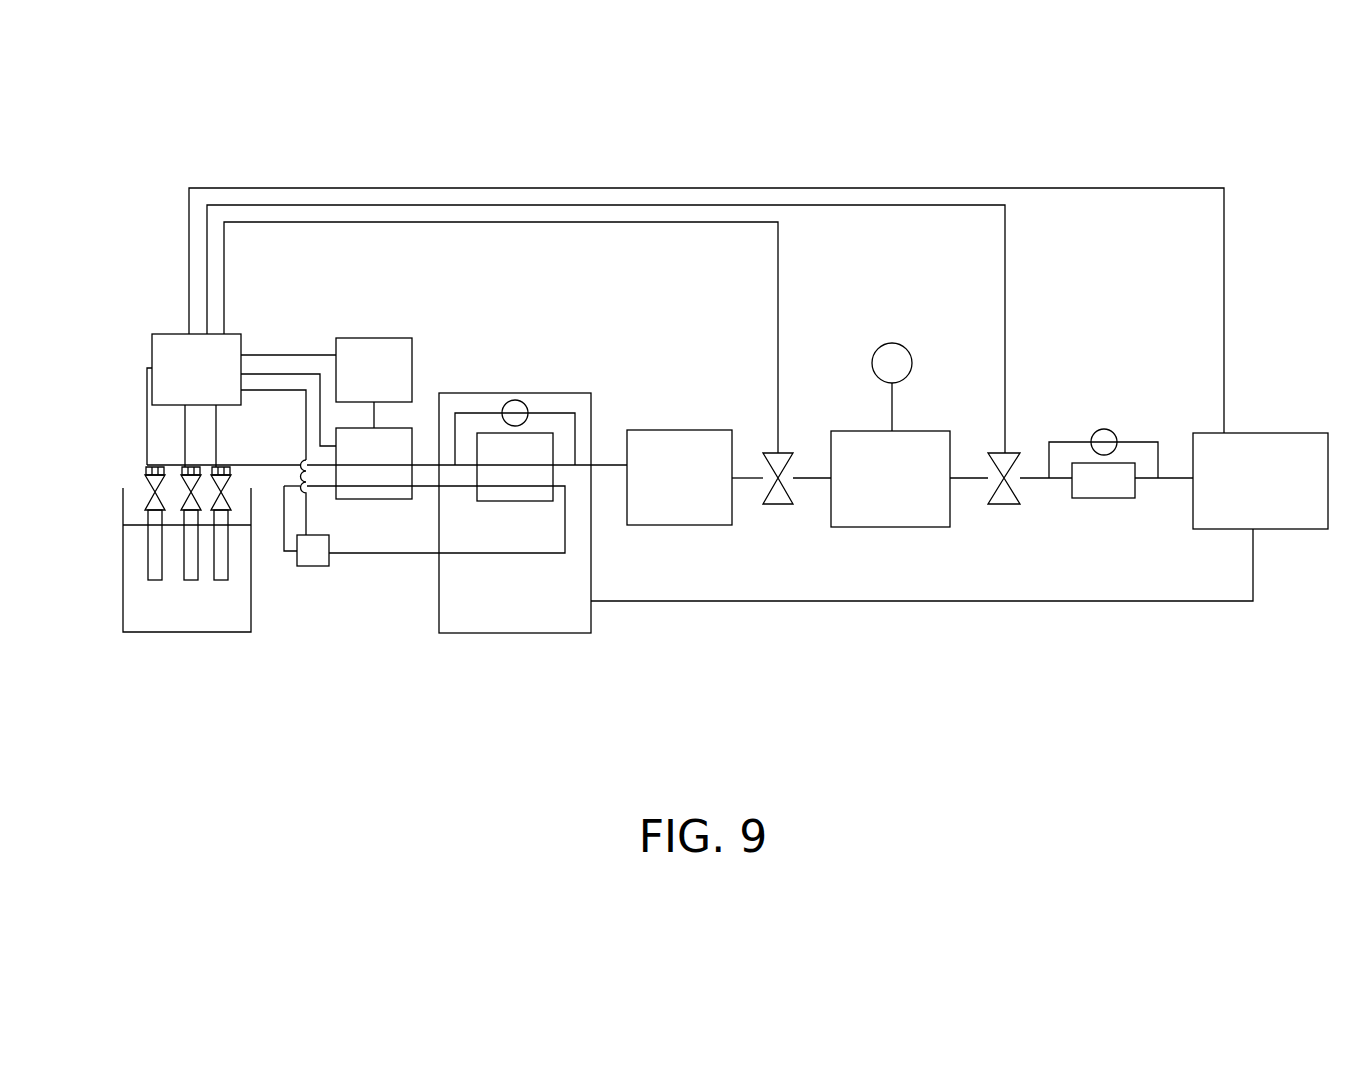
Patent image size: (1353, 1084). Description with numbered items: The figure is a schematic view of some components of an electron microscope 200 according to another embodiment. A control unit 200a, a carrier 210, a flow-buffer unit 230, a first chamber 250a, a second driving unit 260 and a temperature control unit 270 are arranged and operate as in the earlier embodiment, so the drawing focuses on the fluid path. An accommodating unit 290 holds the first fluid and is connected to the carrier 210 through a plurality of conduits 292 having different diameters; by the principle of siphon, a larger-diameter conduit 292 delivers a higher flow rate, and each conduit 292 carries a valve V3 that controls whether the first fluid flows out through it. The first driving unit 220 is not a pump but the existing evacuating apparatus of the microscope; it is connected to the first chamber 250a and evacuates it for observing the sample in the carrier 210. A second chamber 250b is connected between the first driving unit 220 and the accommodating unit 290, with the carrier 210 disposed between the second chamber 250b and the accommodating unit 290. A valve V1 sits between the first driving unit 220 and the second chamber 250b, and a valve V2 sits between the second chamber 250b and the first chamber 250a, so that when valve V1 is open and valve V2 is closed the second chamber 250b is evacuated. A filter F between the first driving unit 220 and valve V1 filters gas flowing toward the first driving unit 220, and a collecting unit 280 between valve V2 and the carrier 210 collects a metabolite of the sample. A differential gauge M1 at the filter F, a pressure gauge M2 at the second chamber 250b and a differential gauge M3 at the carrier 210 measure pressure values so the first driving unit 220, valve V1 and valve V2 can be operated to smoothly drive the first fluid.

The electron microscope 200 is at (1288, 714).
The control unit 200a is at (171, 333).
The carrier 210 is at (545, 433).
The first driving unit 220 is at (1275, 432).
The flow-buffer unit 230 is at (371, 499).
The first chamber 250a is at (462, 393).
The second chamber 250b is at (929, 430).
The second driving unit 260 is at (312, 566).
The temperature control unit 270 is at (384, 338).
The collecting unit 280 is at (680, 430).
The accommodating unit 290 is at (251, 603).
The conduits 292 is at (152, 578).
The valve V1 is at (1005, 452).
The valve V2 is at (786, 452).
The valve V3 is at (221, 466).
The differential gauge M1 is at (1107, 428).
The pressure gauge M2 is at (892, 343).
The differential gauge M3 is at (514, 400).
The filter F is at (1083, 462).